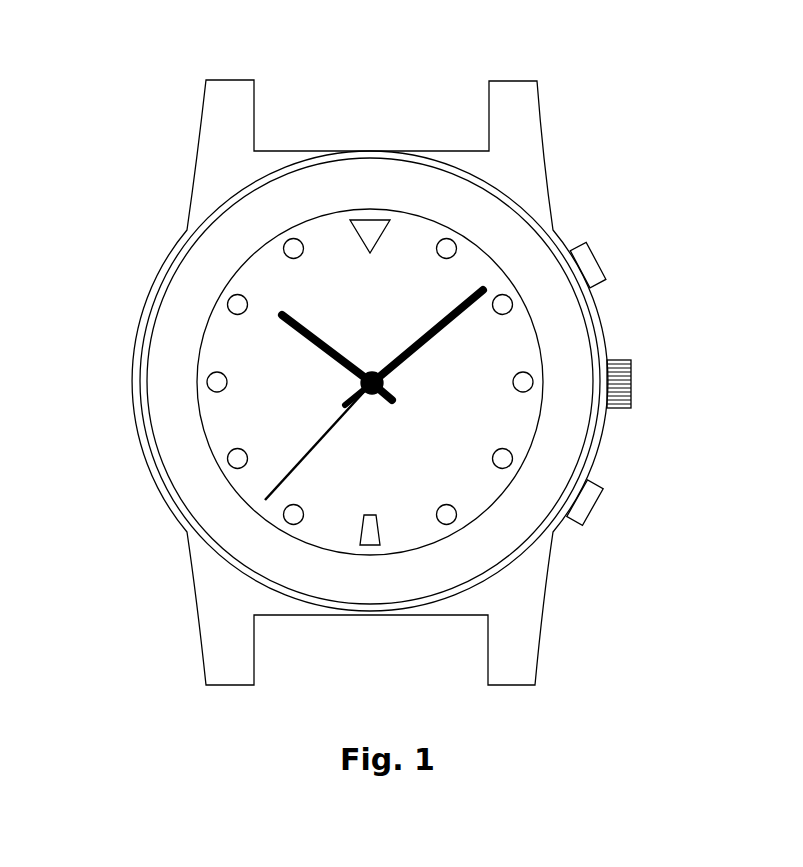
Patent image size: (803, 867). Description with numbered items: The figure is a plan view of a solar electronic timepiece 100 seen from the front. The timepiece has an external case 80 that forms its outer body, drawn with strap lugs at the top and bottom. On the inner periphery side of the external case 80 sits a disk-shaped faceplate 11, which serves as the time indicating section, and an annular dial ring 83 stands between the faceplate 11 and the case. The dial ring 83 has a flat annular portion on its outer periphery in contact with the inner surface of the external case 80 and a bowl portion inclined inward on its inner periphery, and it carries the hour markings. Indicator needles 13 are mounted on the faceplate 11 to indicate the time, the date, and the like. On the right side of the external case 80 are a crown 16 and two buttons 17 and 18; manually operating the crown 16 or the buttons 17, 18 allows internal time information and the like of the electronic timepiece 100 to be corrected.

The electronic timepiece 100 is at (612, 92).
The external case 80 is at (140, 443).
The dial ring 83 is at (582, 318).
The faceplate 11 is at (492, 411).
The indicator needles 13 is at (258, 357).
The crown 16 is at (632, 383).
The button 17 is at (603, 265).
The button 18 is at (592, 507).